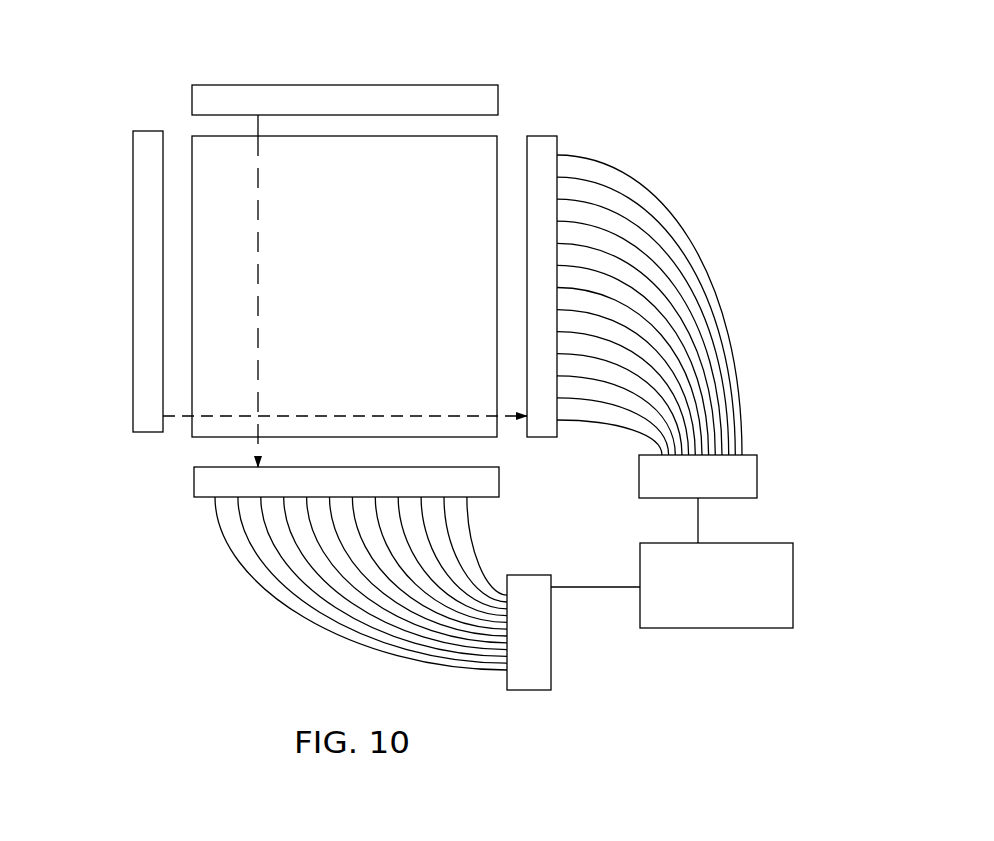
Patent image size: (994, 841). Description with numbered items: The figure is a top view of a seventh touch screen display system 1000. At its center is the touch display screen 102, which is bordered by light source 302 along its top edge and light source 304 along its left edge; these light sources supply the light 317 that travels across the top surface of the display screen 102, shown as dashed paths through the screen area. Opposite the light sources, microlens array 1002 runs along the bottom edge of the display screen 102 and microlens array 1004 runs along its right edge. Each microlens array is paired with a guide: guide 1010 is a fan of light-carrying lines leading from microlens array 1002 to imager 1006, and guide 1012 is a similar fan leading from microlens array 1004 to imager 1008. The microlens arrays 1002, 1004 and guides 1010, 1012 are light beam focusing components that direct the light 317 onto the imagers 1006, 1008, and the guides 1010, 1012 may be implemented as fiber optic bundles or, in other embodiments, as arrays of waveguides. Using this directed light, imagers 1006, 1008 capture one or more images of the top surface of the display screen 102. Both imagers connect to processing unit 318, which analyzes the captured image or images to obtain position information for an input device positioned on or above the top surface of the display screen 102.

The touch screen display system 1000 is at (763, 133).
The light source 302 is at (498, 99).
The light source 304 is at (133, 316).
The touch display screen 102 is at (344, 286).
The light 317 is at (260, 359).
The microlens array 1002 is at (194, 481).
The microlens array 1004 is at (544, 438).
The imager 1006 is at (551, 674).
The imager 1008 is at (757, 472).
The guide 1010 is at (247, 602).
The guide 1012 is at (721, 296).
The processing unit 318 is at (716, 585).